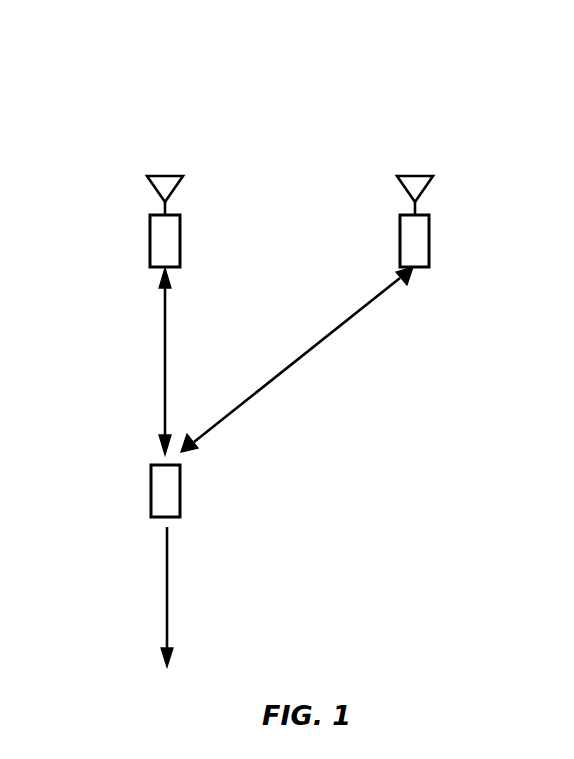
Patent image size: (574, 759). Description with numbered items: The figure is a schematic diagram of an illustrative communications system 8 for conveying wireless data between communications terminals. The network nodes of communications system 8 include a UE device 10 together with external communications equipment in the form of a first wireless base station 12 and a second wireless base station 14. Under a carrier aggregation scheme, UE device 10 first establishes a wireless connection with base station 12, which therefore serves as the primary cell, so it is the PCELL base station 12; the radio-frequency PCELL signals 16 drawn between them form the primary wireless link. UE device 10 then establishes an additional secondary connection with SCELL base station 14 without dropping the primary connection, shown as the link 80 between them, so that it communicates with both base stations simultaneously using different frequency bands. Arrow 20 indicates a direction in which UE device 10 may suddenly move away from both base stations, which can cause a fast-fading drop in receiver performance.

The communications system 8 is at (473, 118).
The UE device 10 is at (180, 490).
The PCELL base station 12 is at (180, 240).
The SCELL base station 14 is at (400, 238).
The PCELL signals 16 is at (163, 356).
The arrow 20 is at (167, 587).
The link between SCELL and UE 80 is at (307, 354).